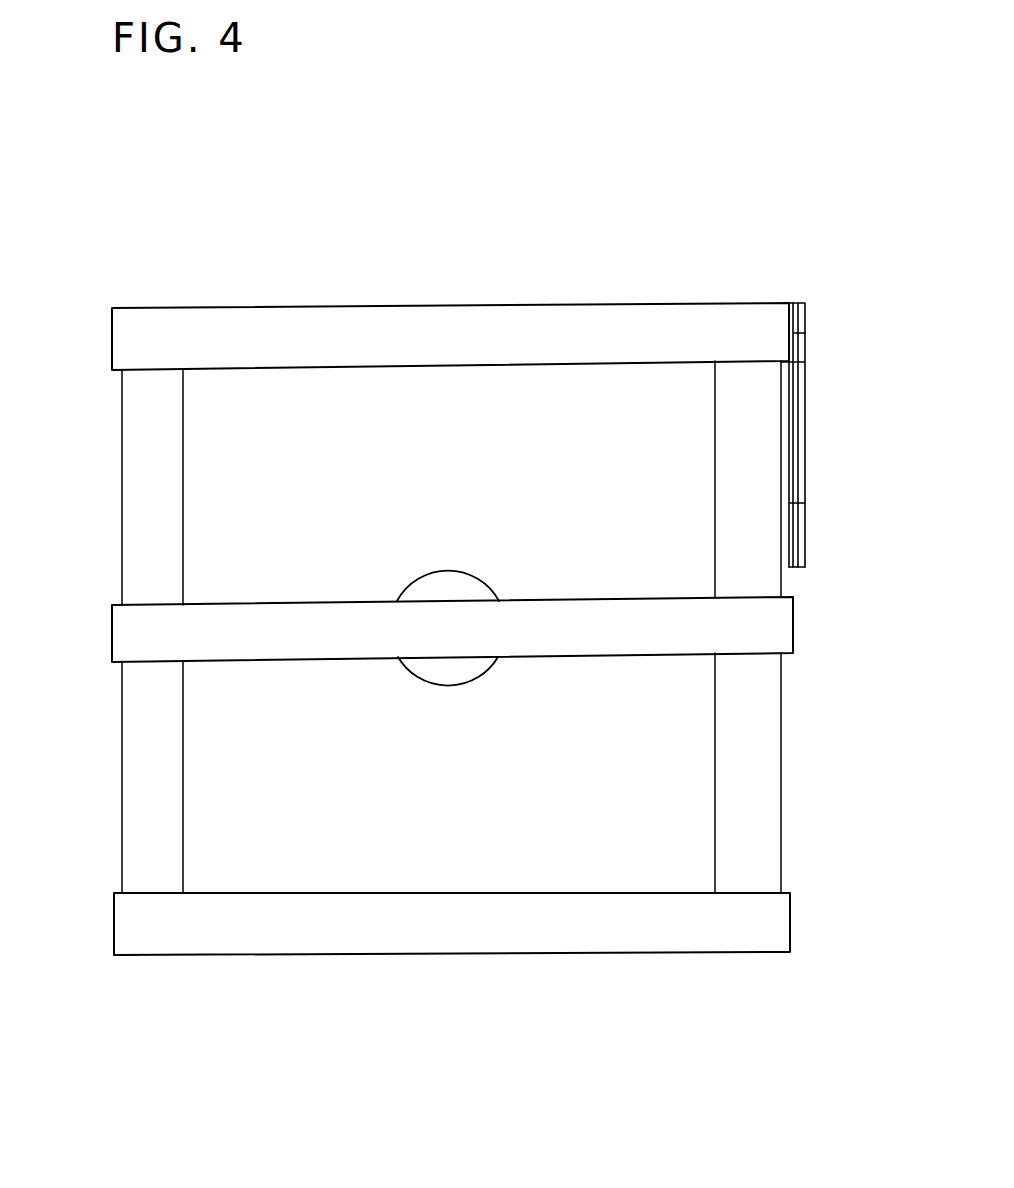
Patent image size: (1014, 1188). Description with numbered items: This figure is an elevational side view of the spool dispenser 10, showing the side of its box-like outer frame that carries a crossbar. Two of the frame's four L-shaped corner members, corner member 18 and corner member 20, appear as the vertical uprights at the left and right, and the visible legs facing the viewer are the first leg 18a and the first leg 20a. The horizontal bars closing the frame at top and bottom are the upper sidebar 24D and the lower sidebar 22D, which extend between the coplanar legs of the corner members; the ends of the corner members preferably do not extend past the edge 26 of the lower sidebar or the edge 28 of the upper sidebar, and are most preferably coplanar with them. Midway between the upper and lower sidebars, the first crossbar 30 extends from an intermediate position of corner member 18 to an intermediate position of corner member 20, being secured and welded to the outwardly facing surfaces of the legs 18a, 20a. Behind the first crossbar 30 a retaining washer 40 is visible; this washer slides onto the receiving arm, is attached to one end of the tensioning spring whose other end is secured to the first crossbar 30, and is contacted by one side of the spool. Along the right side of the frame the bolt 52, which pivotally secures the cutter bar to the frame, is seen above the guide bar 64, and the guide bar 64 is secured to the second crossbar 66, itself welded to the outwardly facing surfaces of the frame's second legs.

The spool dispenser 10 is at (200, 218).
The corner member 18 is at (106, 631).
The first leg 18a is at (138, 725).
The corner member 20 is at (803, 627).
The first leg 20a is at (760, 708).
The lower sidebar 22D is at (452, 958).
The upper sidebar 24D is at (450, 295).
The edge 26 is at (553, 965).
The edge 28 is at (559, 299).
The first crossbar 30 is at (452, 588).
The retaining washer 40 is at (473, 582).
The bolt 52 is at (803, 330).
The guide bar 64 is at (839, 435).
The second crossbar 66 is at (783, 567).